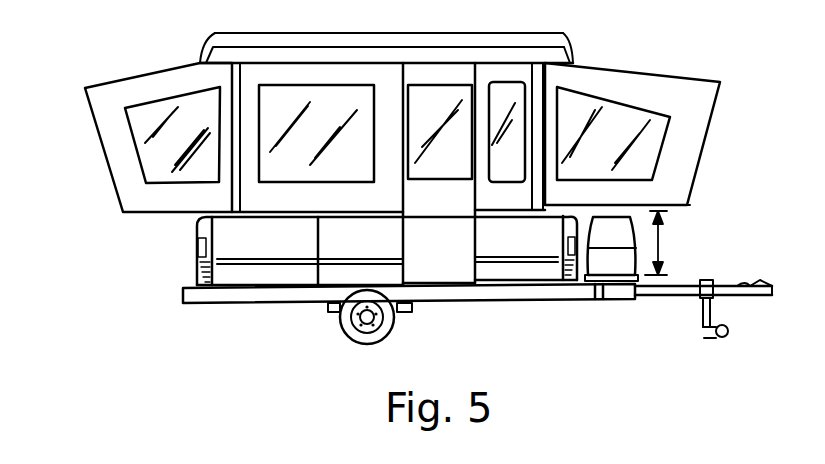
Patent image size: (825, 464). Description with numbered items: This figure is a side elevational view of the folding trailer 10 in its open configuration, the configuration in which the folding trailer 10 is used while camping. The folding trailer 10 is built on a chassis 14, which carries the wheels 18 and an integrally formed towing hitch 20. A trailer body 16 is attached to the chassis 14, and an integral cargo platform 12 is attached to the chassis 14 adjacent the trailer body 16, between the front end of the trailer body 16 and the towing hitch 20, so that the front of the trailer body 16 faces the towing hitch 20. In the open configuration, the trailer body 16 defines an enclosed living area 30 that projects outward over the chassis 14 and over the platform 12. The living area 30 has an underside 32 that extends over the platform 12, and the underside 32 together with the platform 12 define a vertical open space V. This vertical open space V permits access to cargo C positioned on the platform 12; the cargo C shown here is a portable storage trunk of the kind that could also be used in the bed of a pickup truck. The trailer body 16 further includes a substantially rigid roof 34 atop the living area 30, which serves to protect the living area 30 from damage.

The folding camping trailer 10 is at (143, 64).
The integral cargo platform 12 is at (660, 282).
The chassis 14 is at (440, 292).
The trailer body 16 is at (227, 238).
The wheels 18 is at (377, 333).
The towing hitch 20 is at (797, 250).
The enclosed living area 30 is at (640, 70).
The underside 32 is at (672, 210).
The roof 34 is at (607, 5).
The cargo C is at (612, 258).
The vertical open space V is at (662, 244).